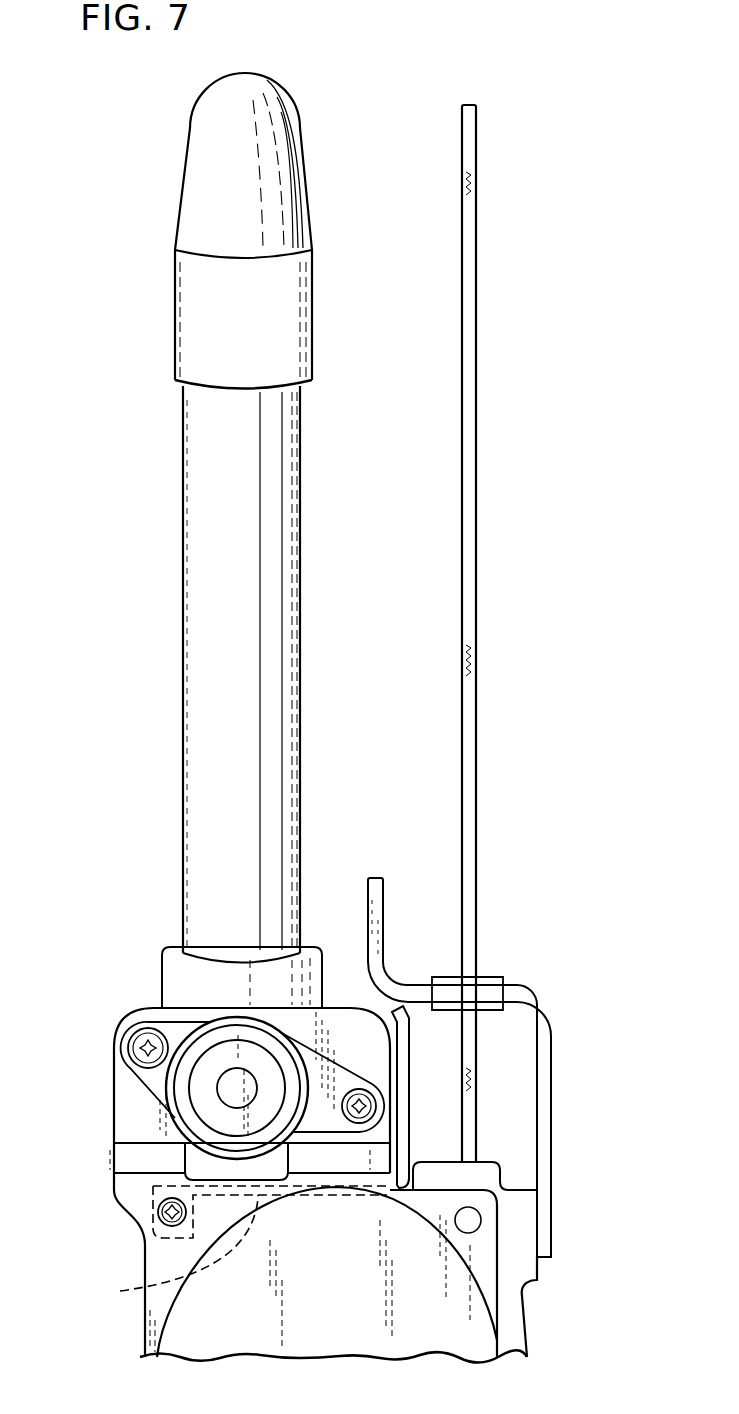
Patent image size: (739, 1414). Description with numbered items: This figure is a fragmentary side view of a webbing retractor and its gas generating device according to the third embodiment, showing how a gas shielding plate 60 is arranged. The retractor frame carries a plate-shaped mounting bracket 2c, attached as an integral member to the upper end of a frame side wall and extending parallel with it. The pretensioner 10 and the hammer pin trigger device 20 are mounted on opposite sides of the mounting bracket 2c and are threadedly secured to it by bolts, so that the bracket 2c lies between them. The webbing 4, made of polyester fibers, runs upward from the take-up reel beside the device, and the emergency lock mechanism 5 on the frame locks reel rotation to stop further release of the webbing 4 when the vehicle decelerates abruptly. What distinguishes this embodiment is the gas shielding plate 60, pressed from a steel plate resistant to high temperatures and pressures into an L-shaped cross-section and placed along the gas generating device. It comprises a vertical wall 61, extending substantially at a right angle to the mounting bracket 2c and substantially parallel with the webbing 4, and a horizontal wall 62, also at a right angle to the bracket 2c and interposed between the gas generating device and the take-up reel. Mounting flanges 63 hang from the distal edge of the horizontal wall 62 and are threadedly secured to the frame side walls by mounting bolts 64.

The pretensioner 10 is at (172, 600).
The webbing 4 is at (470, 531).
The hammer pin trigger device 20 is at (196, 1090).
The mounting bracket 2c is at (137, 1126).
The gas shielding plate 60 is at (413, 1070).
The vertical wall 61 is at (405, 1137).
The mounting bolts 64 is at (150, 1187).
The mounting flanges 63 is at (160, 1248).
The horizontal wall 62 is at (122, 1290).
The emergency lock mechanism 5 is at (456, 1327).